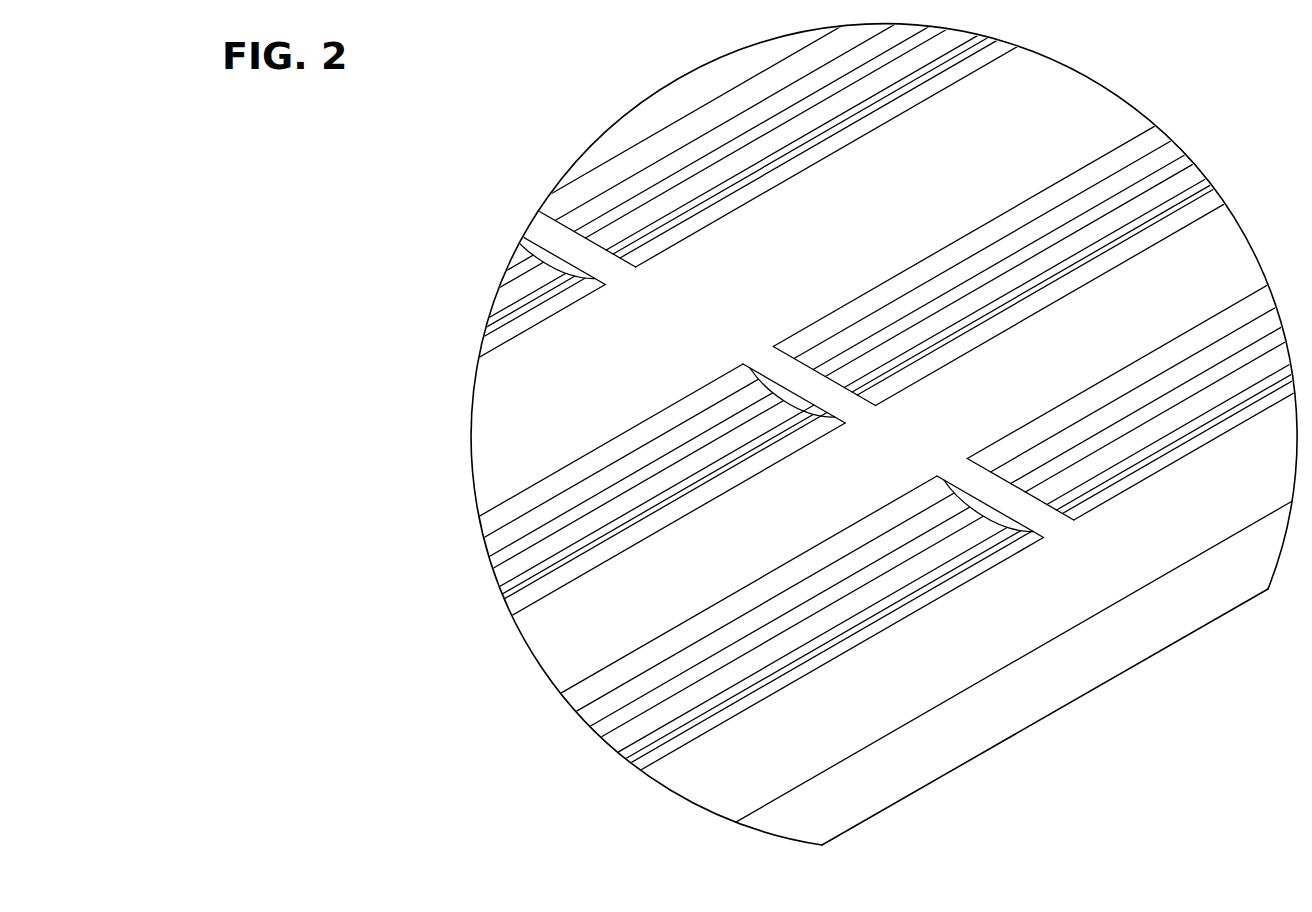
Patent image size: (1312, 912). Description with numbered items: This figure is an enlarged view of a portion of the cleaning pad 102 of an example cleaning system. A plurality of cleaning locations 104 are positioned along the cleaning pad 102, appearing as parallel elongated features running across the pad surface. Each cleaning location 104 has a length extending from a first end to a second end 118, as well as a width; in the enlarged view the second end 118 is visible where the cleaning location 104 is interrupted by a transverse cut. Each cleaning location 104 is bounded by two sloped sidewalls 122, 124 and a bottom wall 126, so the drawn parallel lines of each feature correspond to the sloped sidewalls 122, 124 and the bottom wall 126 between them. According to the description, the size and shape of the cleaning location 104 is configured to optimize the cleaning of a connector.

The cleaning pad 102 is at (1038, 685).
The cleaning location 104 is at (986, 187).
The second end 118 is at (833, 391).
The sloped sidewall 122 is at (913, 274).
The sloped sidewall 124 is at (1000, 312).
The bottom wall 126 is at (1066, 257).